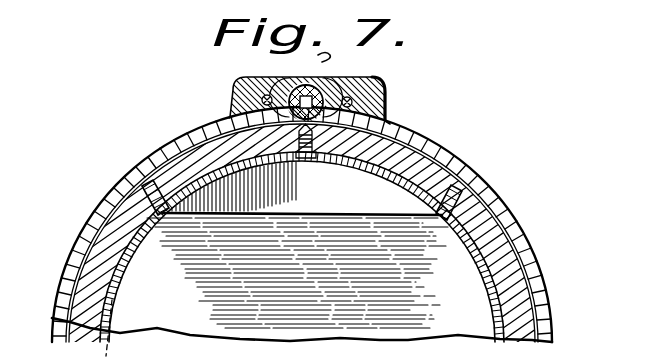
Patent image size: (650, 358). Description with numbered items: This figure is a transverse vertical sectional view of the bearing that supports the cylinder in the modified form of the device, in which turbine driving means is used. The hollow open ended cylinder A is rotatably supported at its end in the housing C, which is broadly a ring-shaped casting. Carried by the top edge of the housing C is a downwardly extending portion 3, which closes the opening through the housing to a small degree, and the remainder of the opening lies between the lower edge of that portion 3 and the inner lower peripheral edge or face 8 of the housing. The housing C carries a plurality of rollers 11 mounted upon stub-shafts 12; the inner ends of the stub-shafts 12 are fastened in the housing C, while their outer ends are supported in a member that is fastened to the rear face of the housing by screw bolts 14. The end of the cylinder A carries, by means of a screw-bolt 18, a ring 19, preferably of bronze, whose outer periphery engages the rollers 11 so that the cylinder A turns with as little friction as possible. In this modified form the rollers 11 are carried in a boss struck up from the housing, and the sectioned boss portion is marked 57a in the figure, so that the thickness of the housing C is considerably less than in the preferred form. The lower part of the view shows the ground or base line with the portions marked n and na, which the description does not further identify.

The screw bolt 14 is at (262, 99).
The stub-shaft 12 is at (282, 84).
The roller 11 is at (323, 93).
The flange 57a is at (363, 91).
The inner lower peripheral edge or face 8 is at (217, 99).
The downwardly extending portion 3 is at (245, 187).
The screw-bolt 18 is at (440, 216).
The ring 19 is at (492, 265).
The housing C is at (524, 245).
The hollow open ended cylinder A is at (184, 299).
The base n is at (302, 329).
The base extension na is at (309, 348).